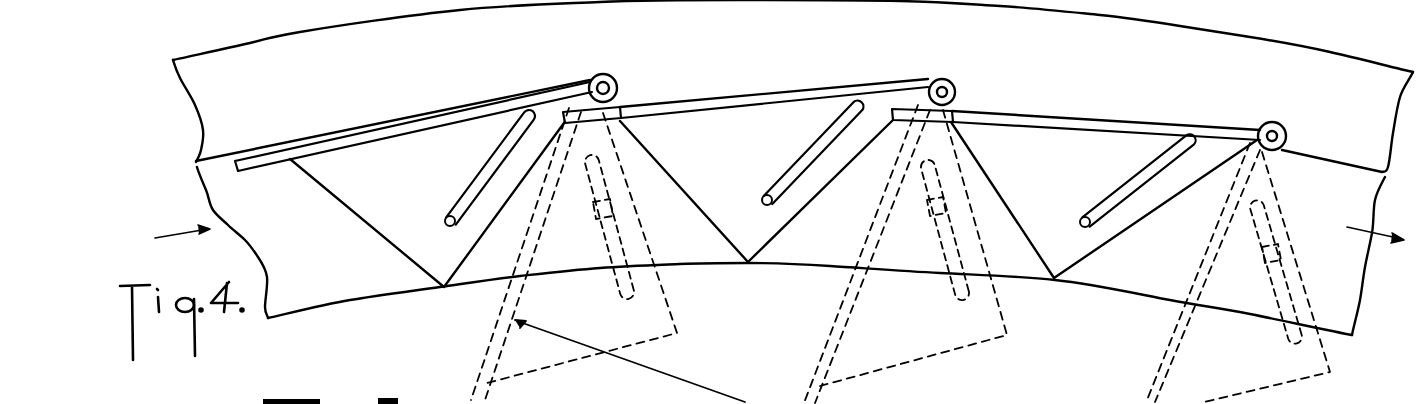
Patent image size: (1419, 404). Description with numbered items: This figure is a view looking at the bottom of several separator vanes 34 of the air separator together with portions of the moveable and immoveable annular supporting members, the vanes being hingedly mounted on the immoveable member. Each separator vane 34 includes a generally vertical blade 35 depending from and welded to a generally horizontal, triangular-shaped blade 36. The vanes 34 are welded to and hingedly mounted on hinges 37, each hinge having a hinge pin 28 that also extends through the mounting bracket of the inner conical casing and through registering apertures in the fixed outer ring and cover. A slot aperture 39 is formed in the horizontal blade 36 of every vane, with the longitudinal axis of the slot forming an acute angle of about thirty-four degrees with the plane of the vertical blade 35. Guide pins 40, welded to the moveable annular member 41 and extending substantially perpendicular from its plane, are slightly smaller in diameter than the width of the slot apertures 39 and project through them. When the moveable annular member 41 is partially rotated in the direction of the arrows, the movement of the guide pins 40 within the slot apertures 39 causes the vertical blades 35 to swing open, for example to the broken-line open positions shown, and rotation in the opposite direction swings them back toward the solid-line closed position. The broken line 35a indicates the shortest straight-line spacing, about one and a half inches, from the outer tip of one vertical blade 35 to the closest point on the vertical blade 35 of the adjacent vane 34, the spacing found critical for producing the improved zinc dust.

The hinge pin 28 is at (600, 78).
The separator vane 34 is at (860, 76).
The generally vertical blade 35 is at (428, 118).
The broken line 35a is at (645, 368).
The generally horizontal triangular blade 36 is at (382, 212).
The hinge 37 is at (620, 80).
The slot aperture 39 is at (490, 161).
The guide pin 40 is at (448, 226).
The moveable annular member 41 is at (316, 291).